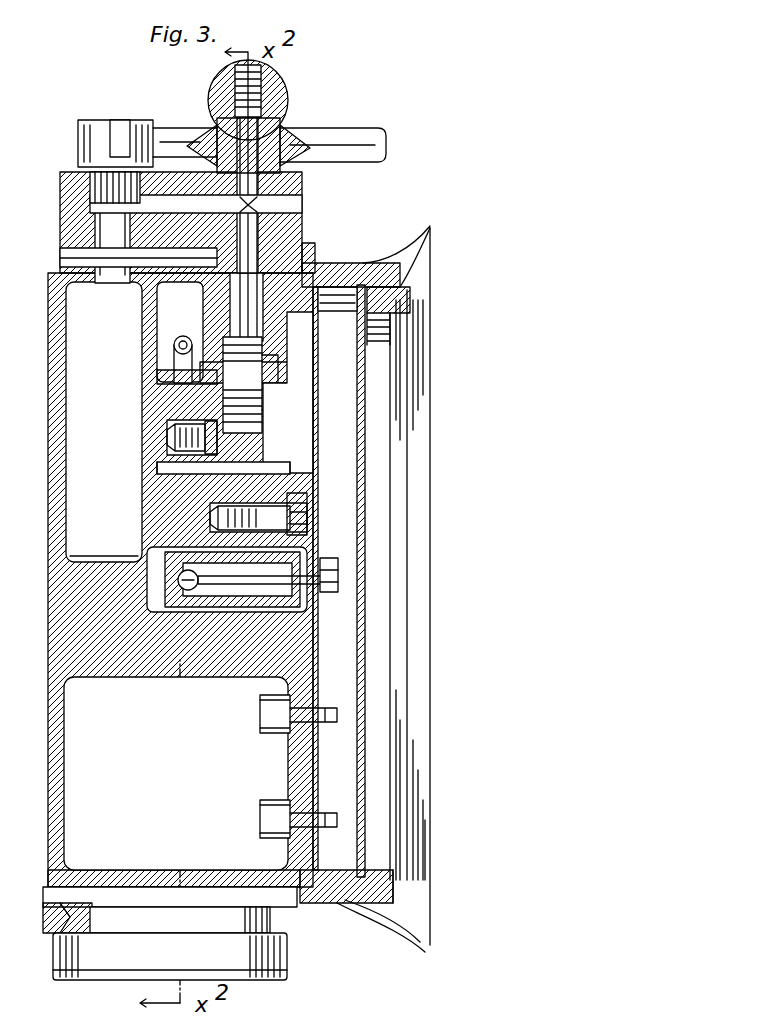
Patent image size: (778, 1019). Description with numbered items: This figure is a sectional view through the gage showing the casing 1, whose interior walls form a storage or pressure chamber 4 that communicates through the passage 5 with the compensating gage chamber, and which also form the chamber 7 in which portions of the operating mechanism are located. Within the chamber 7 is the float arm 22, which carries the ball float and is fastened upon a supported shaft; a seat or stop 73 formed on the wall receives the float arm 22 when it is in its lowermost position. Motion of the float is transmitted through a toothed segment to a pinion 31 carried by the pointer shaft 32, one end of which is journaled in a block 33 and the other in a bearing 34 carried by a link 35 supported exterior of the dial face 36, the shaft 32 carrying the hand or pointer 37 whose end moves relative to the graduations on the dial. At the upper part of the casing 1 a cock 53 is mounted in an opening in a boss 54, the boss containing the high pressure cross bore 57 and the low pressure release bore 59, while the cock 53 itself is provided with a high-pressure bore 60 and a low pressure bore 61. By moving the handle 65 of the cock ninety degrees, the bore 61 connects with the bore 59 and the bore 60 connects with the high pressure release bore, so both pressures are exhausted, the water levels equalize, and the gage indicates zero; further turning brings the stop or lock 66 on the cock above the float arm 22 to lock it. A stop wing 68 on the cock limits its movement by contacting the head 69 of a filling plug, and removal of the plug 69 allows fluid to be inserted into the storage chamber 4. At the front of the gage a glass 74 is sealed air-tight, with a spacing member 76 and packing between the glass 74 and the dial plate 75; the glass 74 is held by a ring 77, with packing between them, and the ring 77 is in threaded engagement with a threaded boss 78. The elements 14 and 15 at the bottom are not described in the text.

The casing 1 is at (56, 346).
The storage or pressure chamber 4 is at (104, 422).
The passage 5 is at (105, 560).
The chamber 7 is at (188, 591).
The bearing bushing 14 is at (288, 895).
The nut 15 is at (262, 963).
The float arm 22 is at (180, 360).
The pinion 31 is at (190, 592).
The pointer shaft 32 is at (262, 592).
The block 33 is at (172, 600).
The bearing 34 is at (338, 572).
The link 35 is at (330, 632).
The dial face 36 is at (316, 390).
The hand or pointer 37 is at (322, 492).
The cock 53 is at (286, 124).
The boss 54 is at (262, 212).
The high pressure cross bore 57 is at (262, 204).
The low pressure release bore 59 is at (305, 266).
The high-pressure bore 60 is at (213, 128).
The low pressure bore 61 is at (238, 304).
The handle 65 is at (348, 142).
The stop or lock 66 is at (270, 383).
The stop wing 68 is at (178, 134).
The head of filling plug 69 is at (94, 141).
The seat or stop 73 is at (190, 398).
The glass 74 is at (362, 402).
The dial plate 75 is at (350, 292).
The spacing member 76 is at (345, 290).
The ring 77 is at (400, 302).
The threaded boss 78 is at (383, 272).